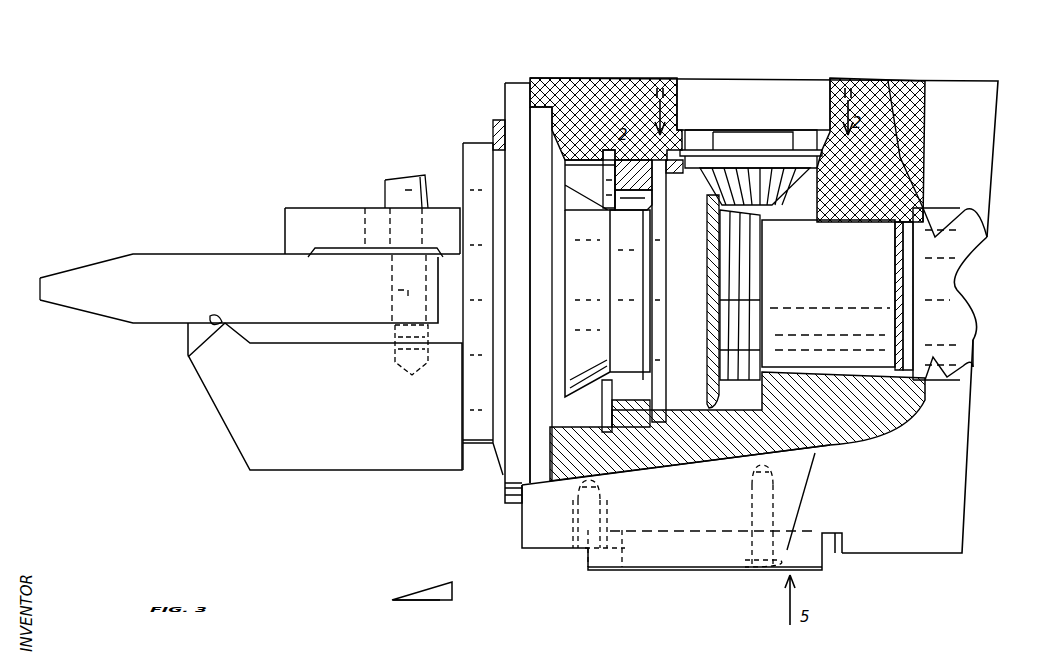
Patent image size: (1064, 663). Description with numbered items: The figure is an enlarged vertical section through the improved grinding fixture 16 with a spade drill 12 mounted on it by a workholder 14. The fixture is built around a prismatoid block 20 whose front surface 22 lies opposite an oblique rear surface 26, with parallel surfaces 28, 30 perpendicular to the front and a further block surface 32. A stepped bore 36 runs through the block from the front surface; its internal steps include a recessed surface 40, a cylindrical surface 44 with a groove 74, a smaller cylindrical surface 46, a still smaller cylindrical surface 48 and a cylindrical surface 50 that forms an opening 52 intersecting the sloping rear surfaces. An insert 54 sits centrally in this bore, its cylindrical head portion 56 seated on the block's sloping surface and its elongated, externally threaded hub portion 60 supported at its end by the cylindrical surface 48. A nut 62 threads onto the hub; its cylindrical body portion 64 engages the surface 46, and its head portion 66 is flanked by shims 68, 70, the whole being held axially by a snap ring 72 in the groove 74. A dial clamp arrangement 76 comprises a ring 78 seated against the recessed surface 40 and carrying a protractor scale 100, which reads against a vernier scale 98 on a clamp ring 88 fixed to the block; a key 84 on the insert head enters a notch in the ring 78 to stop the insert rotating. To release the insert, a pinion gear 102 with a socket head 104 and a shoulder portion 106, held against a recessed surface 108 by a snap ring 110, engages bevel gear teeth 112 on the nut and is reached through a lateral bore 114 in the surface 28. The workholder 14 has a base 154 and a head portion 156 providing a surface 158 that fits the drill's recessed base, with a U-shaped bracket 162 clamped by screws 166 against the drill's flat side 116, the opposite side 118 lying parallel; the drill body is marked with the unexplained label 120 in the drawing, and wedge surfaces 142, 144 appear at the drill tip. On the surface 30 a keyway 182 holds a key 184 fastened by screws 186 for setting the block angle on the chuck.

The spade drill 12 is at (143, 247).
The workholder 14 is at (281, 199).
The grinding fixture 16 is at (430, 103).
The block 20 is at (913, 75).
The front surface 22 is at (522, 518).
The rear surface 26 is at (963, 458).
The parallel surface 28 is at (616, 78).
The parallel surface 30 is at (552, 550).
The block surface 32 is at (543, 508).
The bore 36 is at (590, 185).
The recessed surface 40 is at (585, 110).
The cylindrical surface 44 is at (590, 158).
The cylindrical surface 46 is at (764, 440).
The cylindrical surface 48 is at (835, 375).
The cylindrical surface 50 is at (933, 382).
The opening 52 is at (950, 274).
The insert 54 is at (591, 368).
The cylindrical head portion 56 is at (607, 303).
The hub portion 60 is at (828, 296).
The nut 62 is at (664, 428).
The cylindrical body portion 64 is at (692, 265).
The head portion 66 is at (660, 420).
The shim 68 is at (676, 342).
The shim 70 is at (675, 420).
The snap ring 72 is at (610, 148).
The groove 74 is at (569, 467).
The dial clamp arrangement 76 is at (483, 477).
The ring 78 is at (553, 110).
The key 84 is at (500, 292).
The clamp ring 88 is at (526, 74).
The vernier scale 98 is at (505, 90).
The protractor scale 100 is at (492, 145).
The pinion gear 102 is at (812, 192).
The socket head 104 is at (775, 126).
The shoulder portion 106 is at (638, 172).
The recessed surface 108 is at (825, 160).
The snap ring 110 is at (697, 132).
The bevel gear teeth 112 is at (760, 388).
The lateral bore 114 is at (405, 290).
The flat side 116 is at (208, 253).
The flat side 118 is at (222, 322).
The blade shank 120 is at (252, 303).
The wedge surface 142 is at (68, 272).
The wedge surface 144 is at (75, 306).
The base 154 is at (488, 140).
The head portion 156 is at (358, 447).
The surface 158 is at (188, 356).
The bracket 162 is at (316, 208).
The screw 166 is at (385, 182).
The keyway 182 is at (845, 545).
The key 184 is at (826, 572).
The screw 186 is at (748, 570).